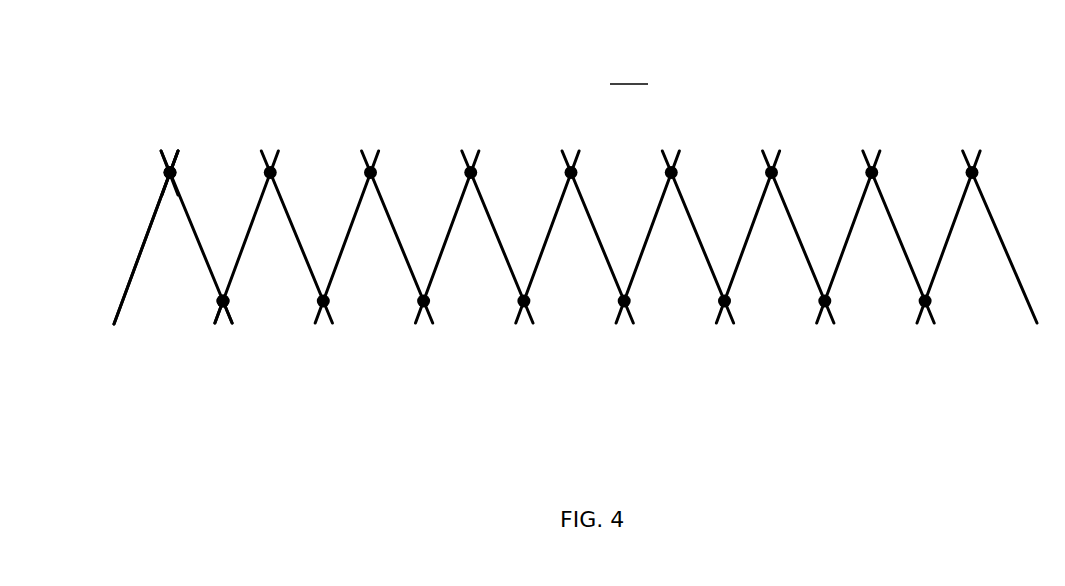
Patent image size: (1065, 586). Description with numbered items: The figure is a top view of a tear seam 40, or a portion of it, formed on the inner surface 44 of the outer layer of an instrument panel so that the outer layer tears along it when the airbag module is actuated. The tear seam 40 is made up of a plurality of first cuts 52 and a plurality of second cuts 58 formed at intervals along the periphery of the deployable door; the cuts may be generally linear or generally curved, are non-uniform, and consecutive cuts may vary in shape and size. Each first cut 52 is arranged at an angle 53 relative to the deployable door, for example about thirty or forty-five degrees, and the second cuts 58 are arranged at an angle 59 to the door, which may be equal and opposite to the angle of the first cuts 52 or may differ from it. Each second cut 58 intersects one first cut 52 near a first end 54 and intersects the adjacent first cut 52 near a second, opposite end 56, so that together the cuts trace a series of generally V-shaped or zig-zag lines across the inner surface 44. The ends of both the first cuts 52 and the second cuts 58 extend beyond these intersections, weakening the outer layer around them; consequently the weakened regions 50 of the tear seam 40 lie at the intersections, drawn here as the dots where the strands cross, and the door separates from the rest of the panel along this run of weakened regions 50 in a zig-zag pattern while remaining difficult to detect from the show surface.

The tear seam 40 is at (765, 88).
The inner surface 44 is at (629, 72).
The weakened regions 50 is at (177, 172).
The first cuts 52 is at (143, 248).
The angle 53 is at (160, 281).
The first end 54 is at (178, 157).
The second end 56 is at (218, 320).
The second cuts 58 is at (188, 258).
The angle 59 is at (203, 279).